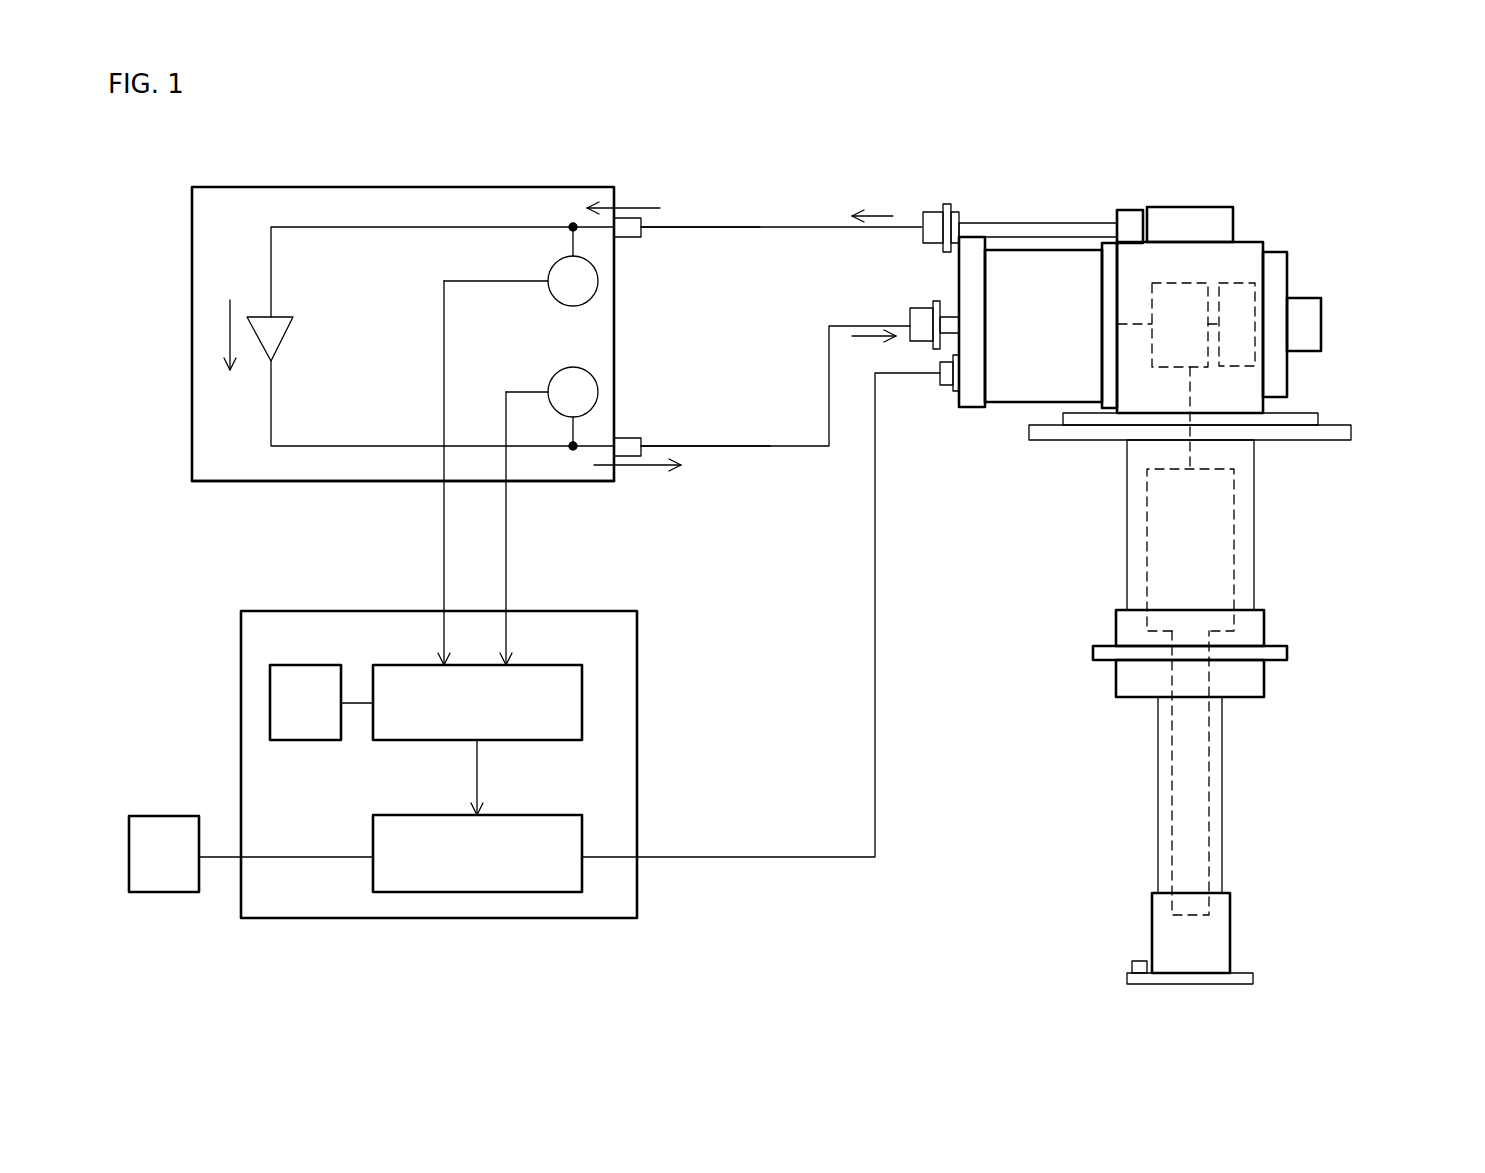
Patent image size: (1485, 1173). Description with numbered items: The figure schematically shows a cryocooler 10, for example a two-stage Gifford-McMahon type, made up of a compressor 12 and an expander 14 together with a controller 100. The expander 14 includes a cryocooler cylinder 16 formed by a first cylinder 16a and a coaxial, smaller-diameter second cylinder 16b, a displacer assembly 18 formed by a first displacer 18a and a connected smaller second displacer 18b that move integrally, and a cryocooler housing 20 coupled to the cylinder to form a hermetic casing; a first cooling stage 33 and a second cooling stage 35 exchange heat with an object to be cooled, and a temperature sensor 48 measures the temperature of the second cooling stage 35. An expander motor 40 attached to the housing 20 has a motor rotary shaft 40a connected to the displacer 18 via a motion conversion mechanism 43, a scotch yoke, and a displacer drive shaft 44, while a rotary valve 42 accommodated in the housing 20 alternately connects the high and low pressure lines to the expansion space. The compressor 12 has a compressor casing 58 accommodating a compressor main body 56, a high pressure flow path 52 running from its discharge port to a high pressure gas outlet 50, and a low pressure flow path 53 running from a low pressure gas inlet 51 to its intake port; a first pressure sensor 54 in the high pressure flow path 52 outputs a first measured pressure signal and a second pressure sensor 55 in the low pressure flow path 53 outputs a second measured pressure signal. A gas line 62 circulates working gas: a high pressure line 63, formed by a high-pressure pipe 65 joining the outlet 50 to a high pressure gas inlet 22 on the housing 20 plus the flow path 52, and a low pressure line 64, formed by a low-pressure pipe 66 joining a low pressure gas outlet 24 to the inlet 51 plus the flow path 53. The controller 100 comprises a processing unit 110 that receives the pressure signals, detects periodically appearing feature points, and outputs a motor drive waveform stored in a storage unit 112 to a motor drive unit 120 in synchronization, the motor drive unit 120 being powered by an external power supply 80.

The cryocooler 10 is at (805, 976).
The compressor 12 is at (240, 187).
The expander 14 is at (1292, 213).
The cryocooler cylinder 16 is at (955, 573).
The first cylinder 16a is at (1136, 546).
The second cylinder 16b is at (1165, 745).
The displacer assembly 18 is at (1408, 558).
The first displacer 18a is at (1235, 585).
The second displacer 18b is at (1210, 752).
The cryocooler housing 20 is at (1247, 241).
The high pressure gas inlet 22 is at (921, 307).
The low pressure gas outlet 24 is at (932, 204).
The first cooling stage 33 is at (1264, 620).
The second cooling stage 35 is at (1230, 931).
The expander motor 40 is at (1023, 249).
The motor rotary shaft 40a is at (1135, 323).
The rotary valve 42 is at (1240, 282).
The motion conversion mechanism 43 is at (1188, 282).
The displacer drive shaft 44 is at (1190, 388).
The temperature sensor 48 is at (1138, 960).
The high pressure gas outlet 50 is at (622, 437).
The low pressure gas inlet 51 is at (628, 238).
The high pressure flow path 52 is at (540, 448).
The low pressure flow path 53 is at (460, 226).
The first pressure sensor 54 is at (553, 369).
The second pressure sensor 55 is at (552, 299).
The compressor main body 56 is at (257, 307).
The compressor casing 58 is at (217, 483).
The gas line 62 is at (837, 133).
The high pressure line 63 is at (791, 445).
The low pressure line 64 is at (750, 226).
The high-pressure pipe 65 is at (712, 448).
The low-pressure pipe 66 is at (700, 229).
The external power supply 80 is at (160, 816).
The controller 100 is at (637, 640).
The processing unit 110 is at (578, 650).
The storage unit 112 is at (307, 665).
The motor drive unit 120 is at (578, 800).